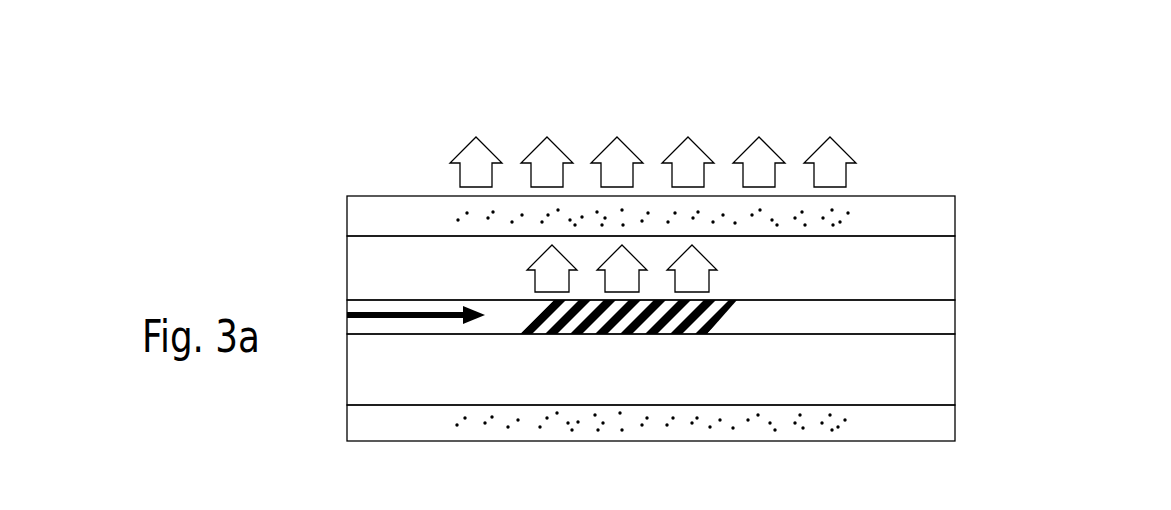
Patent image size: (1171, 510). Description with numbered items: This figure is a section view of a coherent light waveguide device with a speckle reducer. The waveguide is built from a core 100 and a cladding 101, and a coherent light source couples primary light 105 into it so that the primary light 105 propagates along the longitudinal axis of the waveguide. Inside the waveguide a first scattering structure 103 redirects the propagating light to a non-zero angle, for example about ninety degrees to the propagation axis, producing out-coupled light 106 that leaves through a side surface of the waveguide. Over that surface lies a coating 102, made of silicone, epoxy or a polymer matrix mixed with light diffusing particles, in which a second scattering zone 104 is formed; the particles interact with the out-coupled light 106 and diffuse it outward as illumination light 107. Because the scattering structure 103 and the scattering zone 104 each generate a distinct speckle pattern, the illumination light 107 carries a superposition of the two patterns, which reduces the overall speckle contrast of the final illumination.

The core 100 is at (937, 325).
The cladding 101 is at (937, 267).
The coating 102 is at (937, 208).
The scattering structure 103 is at (717, 322).
The scattering zone 104 is at (847, 213).
The primary light 105 is at (347, 315).
The out-coupled light 106 is at (525, 270).
The illumination light 107 is at (832, 138).